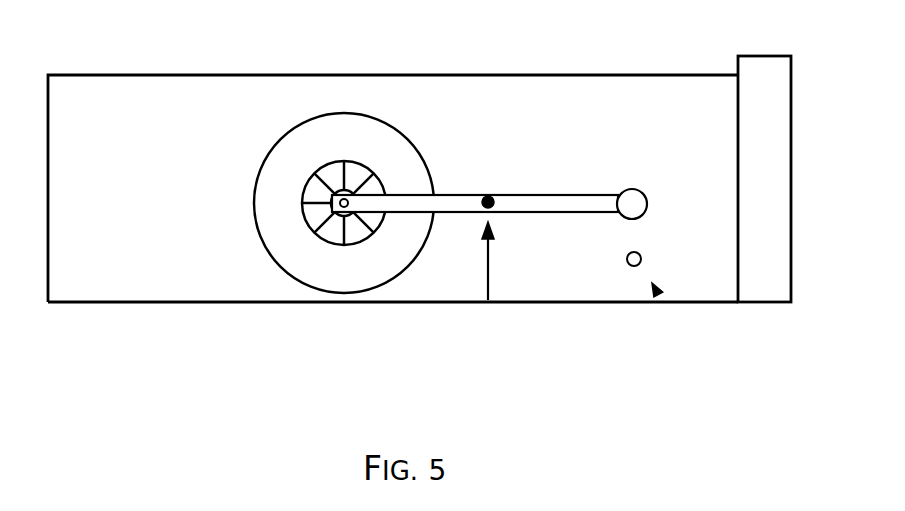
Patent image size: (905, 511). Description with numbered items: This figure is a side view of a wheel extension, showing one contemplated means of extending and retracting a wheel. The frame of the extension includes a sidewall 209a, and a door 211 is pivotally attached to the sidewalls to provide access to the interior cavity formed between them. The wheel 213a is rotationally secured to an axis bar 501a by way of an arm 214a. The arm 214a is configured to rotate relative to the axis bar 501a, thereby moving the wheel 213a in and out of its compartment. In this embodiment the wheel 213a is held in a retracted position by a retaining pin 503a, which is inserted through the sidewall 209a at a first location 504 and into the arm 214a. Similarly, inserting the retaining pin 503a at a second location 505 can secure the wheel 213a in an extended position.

The sidewall 209a is at (271, 75).
The door 211 is at (762, 303).
The wheel 213a is at (254, 212).
The arm 214a is at (558, 212).
The axis bar 501a is at (629, 189).
The retaining pin 503a is at (483, 198).
The first location 504 is at (488, 300).
The second location 505 is at (657, 292).